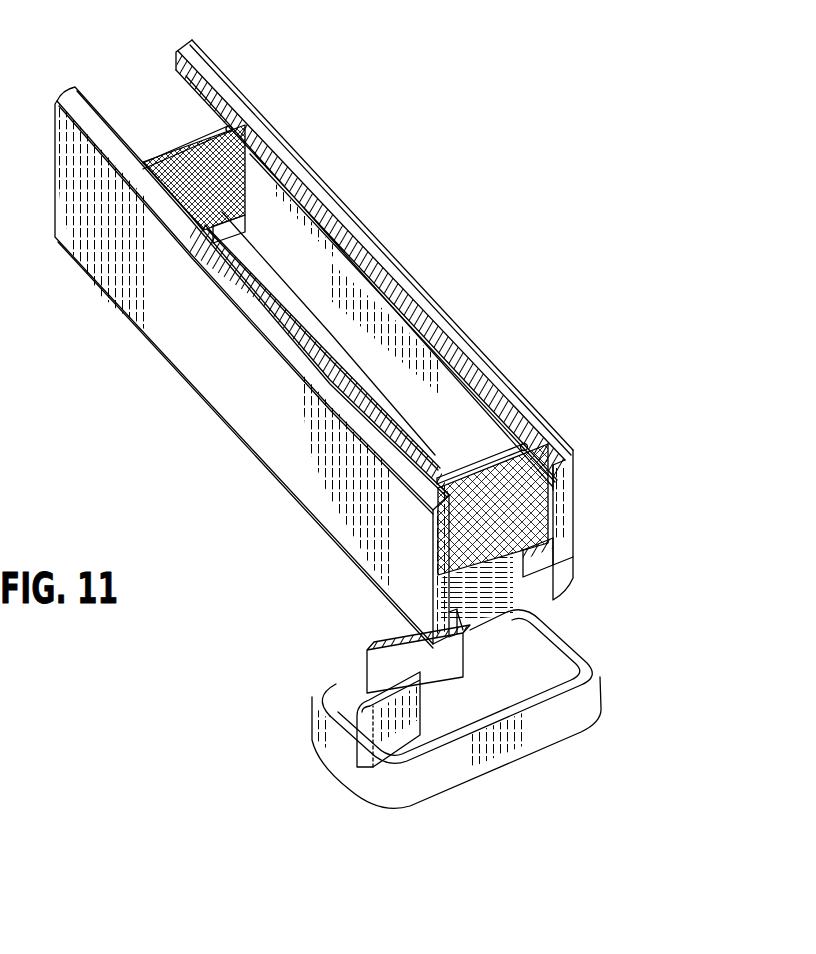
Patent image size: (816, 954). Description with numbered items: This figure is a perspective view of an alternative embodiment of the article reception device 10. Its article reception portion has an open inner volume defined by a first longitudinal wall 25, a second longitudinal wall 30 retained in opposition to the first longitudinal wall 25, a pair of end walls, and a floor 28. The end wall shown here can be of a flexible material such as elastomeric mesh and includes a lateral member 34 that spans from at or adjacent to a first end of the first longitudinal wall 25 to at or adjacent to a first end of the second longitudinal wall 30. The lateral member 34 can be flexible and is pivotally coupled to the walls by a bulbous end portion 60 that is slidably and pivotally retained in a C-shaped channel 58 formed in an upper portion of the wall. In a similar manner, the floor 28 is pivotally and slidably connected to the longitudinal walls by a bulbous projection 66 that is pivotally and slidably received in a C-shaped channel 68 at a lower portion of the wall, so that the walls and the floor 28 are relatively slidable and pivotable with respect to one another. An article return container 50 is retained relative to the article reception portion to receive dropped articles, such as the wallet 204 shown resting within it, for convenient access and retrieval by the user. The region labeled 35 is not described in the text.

The article reception device 10 is at (413, 143).
The first longitudinal wall 25 is at (577, 520).
The floor 28 is at (340, 372).
The second longitudinal wall 30 is at (255, 393).
The lateral member 34 is at (478, 455).
The end wall mesh 35 is at (438, 546).
The article return container 50 is at (312, 758).
The C-shaped channel 58 is at (540, 456).
The bulbous end portion 60 is at (518, 446).
The bulbous projection 66 is at (550, 587).
The C-shaped channel 68 is at (518, 557).
The wallet 204 is at (356, 703).